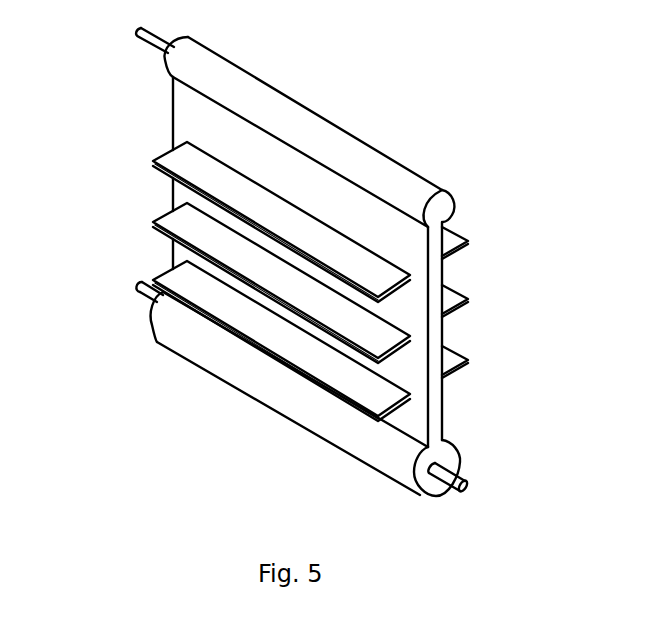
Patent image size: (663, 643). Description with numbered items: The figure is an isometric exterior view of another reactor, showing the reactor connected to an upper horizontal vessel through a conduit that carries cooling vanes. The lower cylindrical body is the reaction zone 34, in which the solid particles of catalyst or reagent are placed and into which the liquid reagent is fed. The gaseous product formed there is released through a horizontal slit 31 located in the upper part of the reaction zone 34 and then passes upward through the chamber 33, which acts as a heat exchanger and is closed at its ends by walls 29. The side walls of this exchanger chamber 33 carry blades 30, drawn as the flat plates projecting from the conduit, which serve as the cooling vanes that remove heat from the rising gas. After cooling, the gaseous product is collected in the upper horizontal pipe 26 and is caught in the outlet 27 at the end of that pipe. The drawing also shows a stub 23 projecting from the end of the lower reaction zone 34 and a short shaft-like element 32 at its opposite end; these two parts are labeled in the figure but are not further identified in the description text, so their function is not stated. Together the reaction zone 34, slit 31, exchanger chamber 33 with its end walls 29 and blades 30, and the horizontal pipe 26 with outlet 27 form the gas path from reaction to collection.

The shaft of lower roller 23 is at (142, 288).
The horizontal pipe 26 is at (313, 123).
The gaseous product outlet 27 is at (140, 34).
The walls 29 is at (437, 290).
The blades 30 is at (165, 157).
The horizontal slit 31 is at (442, 425).
The shaft of lower roller 32 is at (470, 487).
The chamber 33 is at (440, 347).
The reaction zone 34 is at (298, 397).